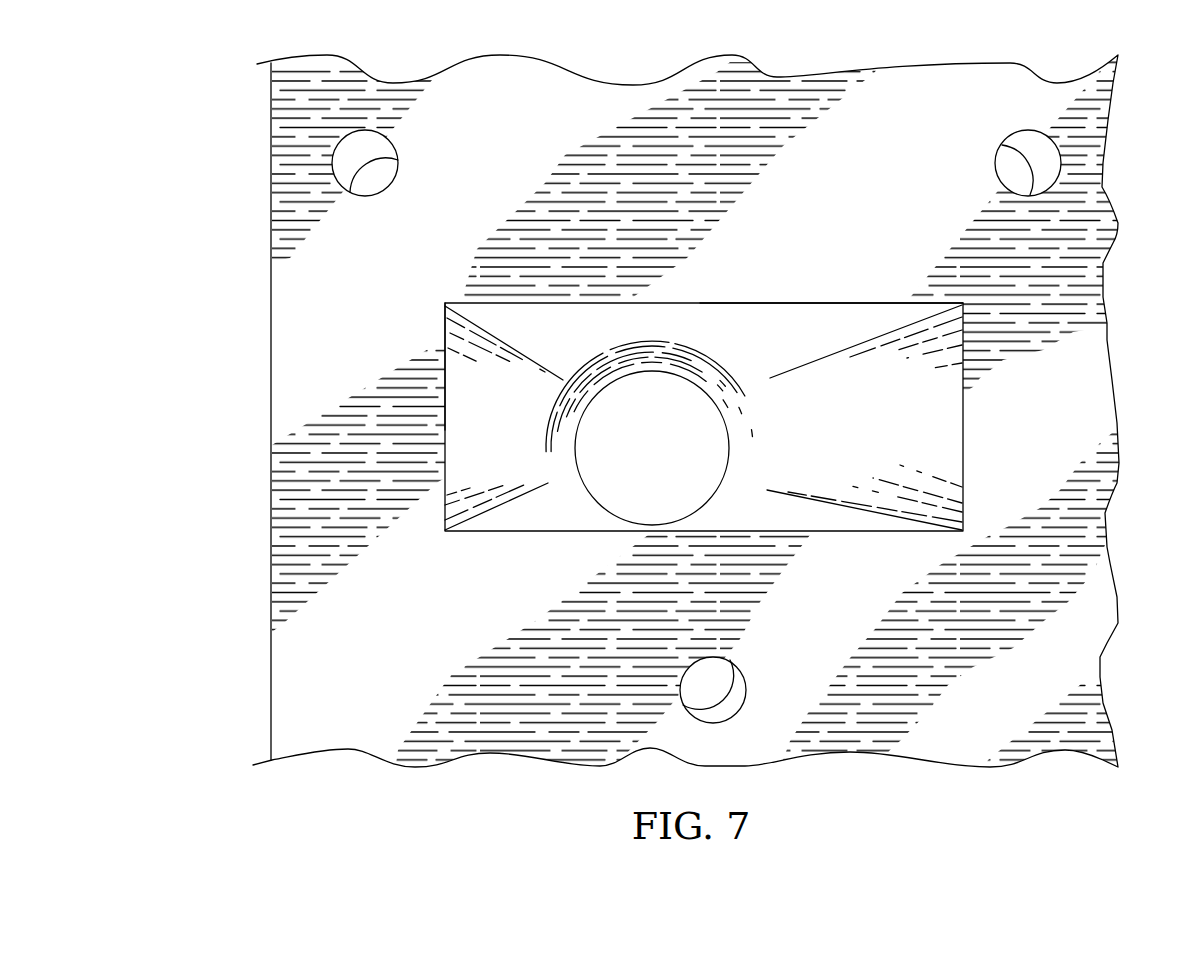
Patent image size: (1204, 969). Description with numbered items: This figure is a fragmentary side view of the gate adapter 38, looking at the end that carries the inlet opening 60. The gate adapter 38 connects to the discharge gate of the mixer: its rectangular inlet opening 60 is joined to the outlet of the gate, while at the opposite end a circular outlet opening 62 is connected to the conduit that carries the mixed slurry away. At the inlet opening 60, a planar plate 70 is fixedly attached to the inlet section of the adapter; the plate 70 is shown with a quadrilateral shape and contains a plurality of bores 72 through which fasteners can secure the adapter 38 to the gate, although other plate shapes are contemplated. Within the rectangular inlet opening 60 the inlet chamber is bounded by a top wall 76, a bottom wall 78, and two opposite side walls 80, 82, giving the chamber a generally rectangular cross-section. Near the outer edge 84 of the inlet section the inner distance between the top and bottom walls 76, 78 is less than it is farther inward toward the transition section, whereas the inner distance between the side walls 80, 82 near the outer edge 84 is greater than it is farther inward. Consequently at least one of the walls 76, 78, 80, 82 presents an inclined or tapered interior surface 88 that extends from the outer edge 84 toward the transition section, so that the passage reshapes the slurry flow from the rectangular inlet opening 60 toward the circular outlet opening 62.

The gate adapter 38 is at (285, 346).
The inlet opening 60 is at (463, 437).
The outlet opening 62 is at (660, 390).
The planar plate 70 is at (350, 687).
The bores 72 is at (348, 155).
The top wall 76 is at (518, 308).
The bottom wall 78 is at (530, 513).
The side wall 80 is at (937, 420).
The side wall 82 is at (463, 390).
The outer edge 84 is at (838, 300).
The tapered interior surface 88 is at (875, 396).